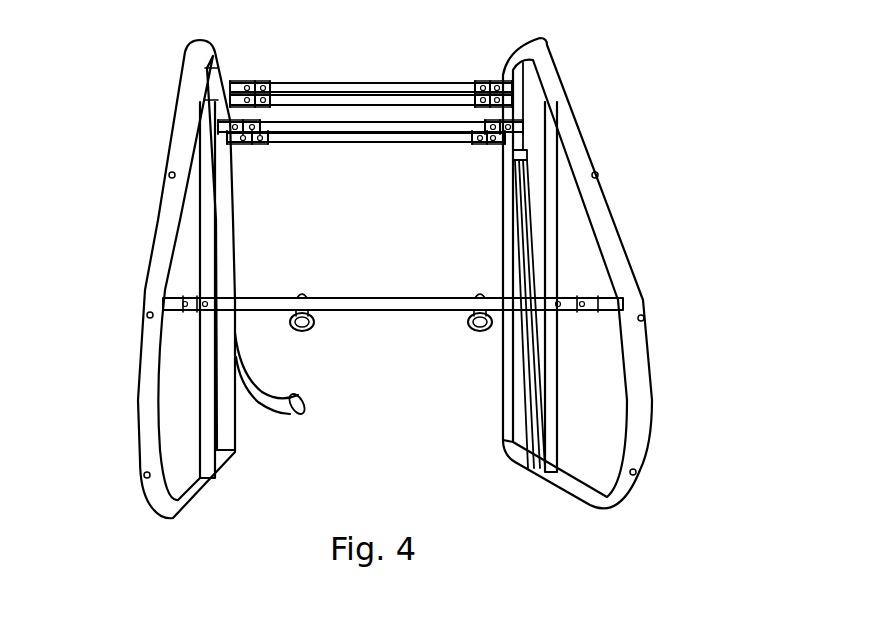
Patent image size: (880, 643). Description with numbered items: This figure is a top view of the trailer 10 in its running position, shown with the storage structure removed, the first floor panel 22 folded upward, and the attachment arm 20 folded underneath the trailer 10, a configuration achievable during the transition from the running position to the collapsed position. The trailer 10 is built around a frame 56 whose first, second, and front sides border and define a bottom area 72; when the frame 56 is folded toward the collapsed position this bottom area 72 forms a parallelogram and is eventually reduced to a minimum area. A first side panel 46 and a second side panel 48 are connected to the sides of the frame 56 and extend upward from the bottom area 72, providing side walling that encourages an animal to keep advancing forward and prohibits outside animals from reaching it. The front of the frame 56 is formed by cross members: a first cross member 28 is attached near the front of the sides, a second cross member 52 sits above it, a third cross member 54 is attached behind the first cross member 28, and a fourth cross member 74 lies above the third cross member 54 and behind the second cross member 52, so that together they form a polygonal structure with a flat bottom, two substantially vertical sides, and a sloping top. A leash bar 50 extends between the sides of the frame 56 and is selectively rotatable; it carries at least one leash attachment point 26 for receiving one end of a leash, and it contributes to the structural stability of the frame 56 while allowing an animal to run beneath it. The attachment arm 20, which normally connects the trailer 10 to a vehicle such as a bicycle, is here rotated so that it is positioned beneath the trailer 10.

The trailer 10 is at (93, 63).
The attachment arm 20 is at (263, 389).
The first floor panel 22 is at (513, 177).
The leash attachment point 26 is at (312, 330).
The first cross member 28 is at (383, 100).
The first side panel 46 is at (176, 390).
The second side panel 48 is at (585, 258).
The leash bar 50 is at (217, 245).
The second cross member 52 is at (332, 84).
The third cross member 54 is at (280, 143).
The frame 56 is at (570, 107).
The bottom area 72 is at (412, 250).
The fourth cross member 74 is at (417, 128).